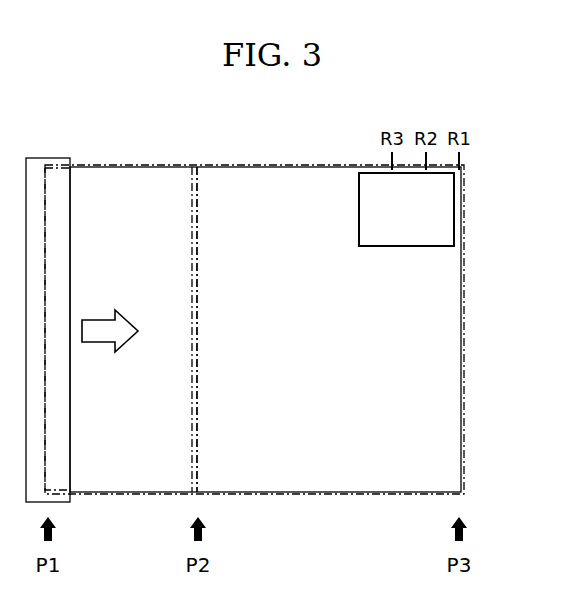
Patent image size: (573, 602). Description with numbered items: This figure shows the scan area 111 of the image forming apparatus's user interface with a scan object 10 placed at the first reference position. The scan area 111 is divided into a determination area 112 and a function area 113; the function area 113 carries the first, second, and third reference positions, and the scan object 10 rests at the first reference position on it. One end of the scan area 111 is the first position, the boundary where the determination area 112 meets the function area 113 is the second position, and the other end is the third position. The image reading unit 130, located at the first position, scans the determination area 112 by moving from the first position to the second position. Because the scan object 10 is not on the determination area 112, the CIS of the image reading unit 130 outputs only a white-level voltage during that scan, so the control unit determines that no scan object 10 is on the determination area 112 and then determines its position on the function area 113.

The scan object 10 is at (398, 247).
The scan area 111 is at (461, 448).
The determination area 112 is at (115, 167).
The function area 113 is at (257, 167).
The image reading unit 130 is at (48, 157).